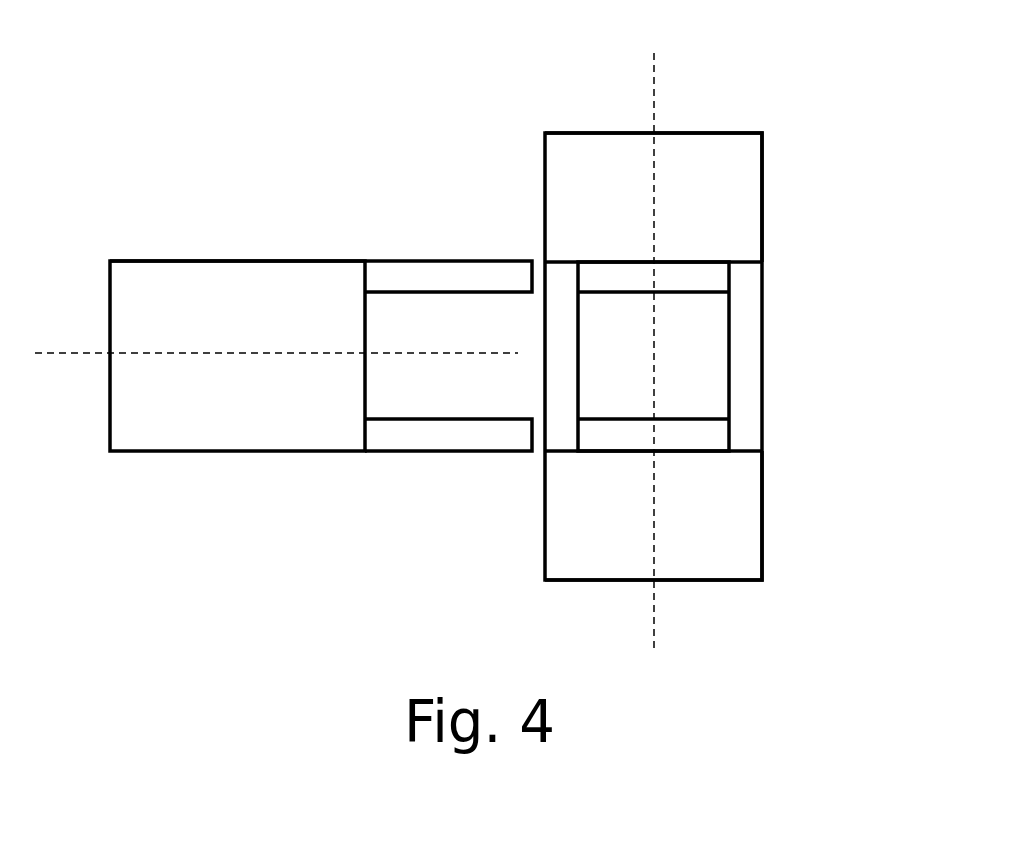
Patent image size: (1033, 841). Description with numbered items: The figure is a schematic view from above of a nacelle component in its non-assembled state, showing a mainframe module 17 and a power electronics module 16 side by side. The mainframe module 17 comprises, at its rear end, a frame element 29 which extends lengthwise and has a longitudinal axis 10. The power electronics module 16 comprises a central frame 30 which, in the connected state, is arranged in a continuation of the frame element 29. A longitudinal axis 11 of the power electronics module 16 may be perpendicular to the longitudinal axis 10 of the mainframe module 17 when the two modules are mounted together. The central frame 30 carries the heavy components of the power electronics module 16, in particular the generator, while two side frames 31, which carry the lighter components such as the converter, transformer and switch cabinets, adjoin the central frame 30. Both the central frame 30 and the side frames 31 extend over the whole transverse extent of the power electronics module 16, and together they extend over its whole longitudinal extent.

The longitudinal axis 10 is at (185, 354).
The longitudinal axis 11 is at (654, 101).
The power electronics module 16 is at (545, 517).
The mainframe module 17 is at (238, 260).
The frame element 29 is at (450, 260).
The central frame 30 is at (745, 353).
The side frames 31 is at (763, 196).